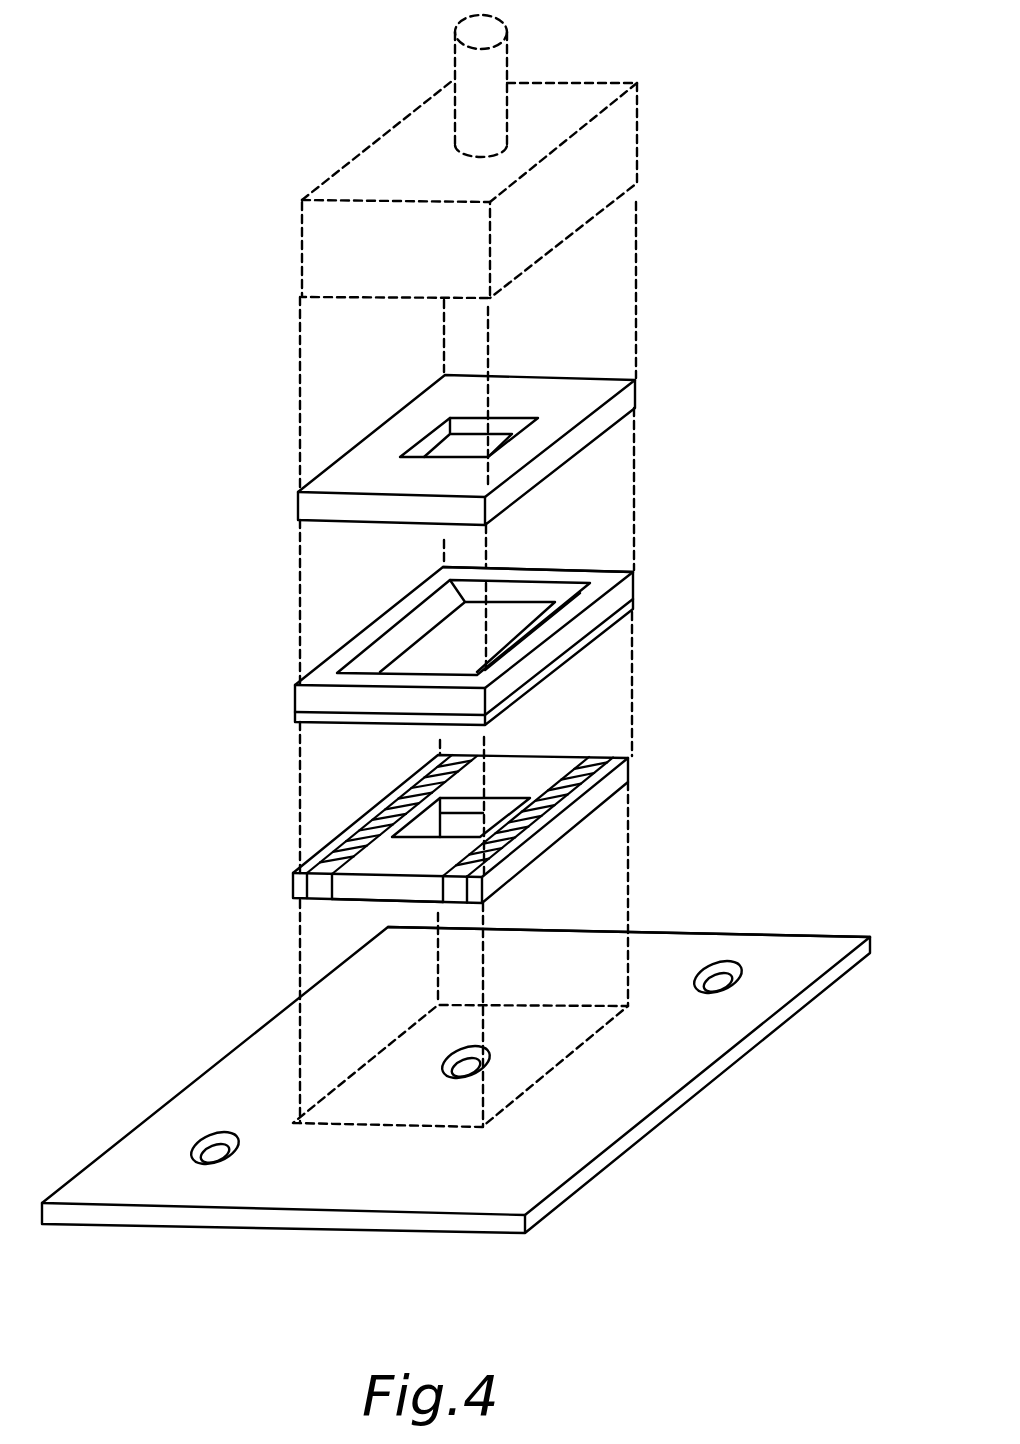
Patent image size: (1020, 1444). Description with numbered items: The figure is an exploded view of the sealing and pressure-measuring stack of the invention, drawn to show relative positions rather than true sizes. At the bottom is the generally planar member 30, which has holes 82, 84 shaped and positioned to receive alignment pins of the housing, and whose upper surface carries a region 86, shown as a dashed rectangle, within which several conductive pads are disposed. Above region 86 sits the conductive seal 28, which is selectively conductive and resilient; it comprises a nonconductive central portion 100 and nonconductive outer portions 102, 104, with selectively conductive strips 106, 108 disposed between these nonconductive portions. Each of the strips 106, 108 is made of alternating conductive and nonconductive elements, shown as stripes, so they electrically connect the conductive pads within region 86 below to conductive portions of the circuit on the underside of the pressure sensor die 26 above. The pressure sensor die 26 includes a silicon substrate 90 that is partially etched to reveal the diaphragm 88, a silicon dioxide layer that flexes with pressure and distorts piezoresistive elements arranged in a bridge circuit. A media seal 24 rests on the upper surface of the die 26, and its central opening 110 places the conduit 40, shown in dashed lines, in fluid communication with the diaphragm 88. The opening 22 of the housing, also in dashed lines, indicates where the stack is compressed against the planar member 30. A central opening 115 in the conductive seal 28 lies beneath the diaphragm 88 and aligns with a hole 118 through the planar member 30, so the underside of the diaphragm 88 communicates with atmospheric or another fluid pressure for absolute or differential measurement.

The opening 22 is at (590, 172).
The conduit 40 is at (488, 72).
The media seal 24 is at (496, 423).
The central opening 110 is at (498, 418).
The pressure sensor die 26 is at (472, 624).
The diaphragm 88 is at (503, 612).
The silicon substrate 90 is at (601, 573).
The conductive seal 28 is at (445, 838).
The central opening 115 is at (497, 807).
The nonconductive outer portion 102 is at (298, 885).
The nonconductive outer portion 104 is at (547, 840).
The selectively conductive strip 106 is at (320, 892).
The selectively conductive strip 108 is at (453, 892).
The nonconductive central portion 100 is at (377, 890).
The generally planar member 30 is at (458, 1077).
The hole 82 is at (197, 1137).
The hole 84 is at (723, 960).
The region 86 is at (558, 1040).
The hole 118 is at (443, 1068).